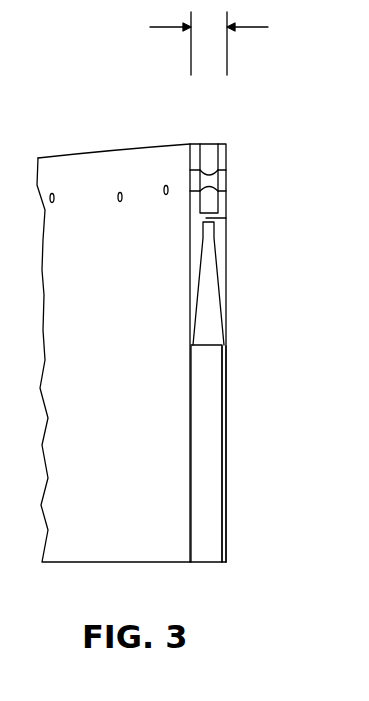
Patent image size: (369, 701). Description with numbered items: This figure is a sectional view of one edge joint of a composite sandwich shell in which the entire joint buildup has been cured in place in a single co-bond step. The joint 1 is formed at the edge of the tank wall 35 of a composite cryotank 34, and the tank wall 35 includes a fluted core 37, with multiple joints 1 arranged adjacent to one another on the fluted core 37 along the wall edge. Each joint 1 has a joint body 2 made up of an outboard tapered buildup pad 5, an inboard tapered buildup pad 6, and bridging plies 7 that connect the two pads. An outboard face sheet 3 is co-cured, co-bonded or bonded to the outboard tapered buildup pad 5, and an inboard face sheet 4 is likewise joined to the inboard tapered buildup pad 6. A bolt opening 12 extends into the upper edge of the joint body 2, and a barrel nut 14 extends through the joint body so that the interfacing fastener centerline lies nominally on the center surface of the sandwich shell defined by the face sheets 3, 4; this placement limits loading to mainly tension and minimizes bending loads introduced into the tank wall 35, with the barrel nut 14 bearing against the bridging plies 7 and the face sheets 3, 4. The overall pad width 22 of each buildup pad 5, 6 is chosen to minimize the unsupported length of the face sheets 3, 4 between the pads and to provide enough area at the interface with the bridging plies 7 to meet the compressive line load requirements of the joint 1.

The joint 1 is at (245, 114).
The joint body 2 is at (227, 167).
The outboard face sheet 3 is at (218, 154).
The inboard face sheet 4 is at (197, 151).
The outboard tapered buildup pad 5 is at (222, 273).
The inboard tapered buildup pad 6 is at (193, 243).
The bridging plies 7 is at (226, 218).
The bolt opening 12 is at (208, 152).
The barrel nut 14 is at (218, 200).
The pad width 22 is at (209, 43).
The composite cryotank 34 is at (90, 138).
The tank wall 35 is at (226, 500).
The fluted core 37 is at (205, 434).